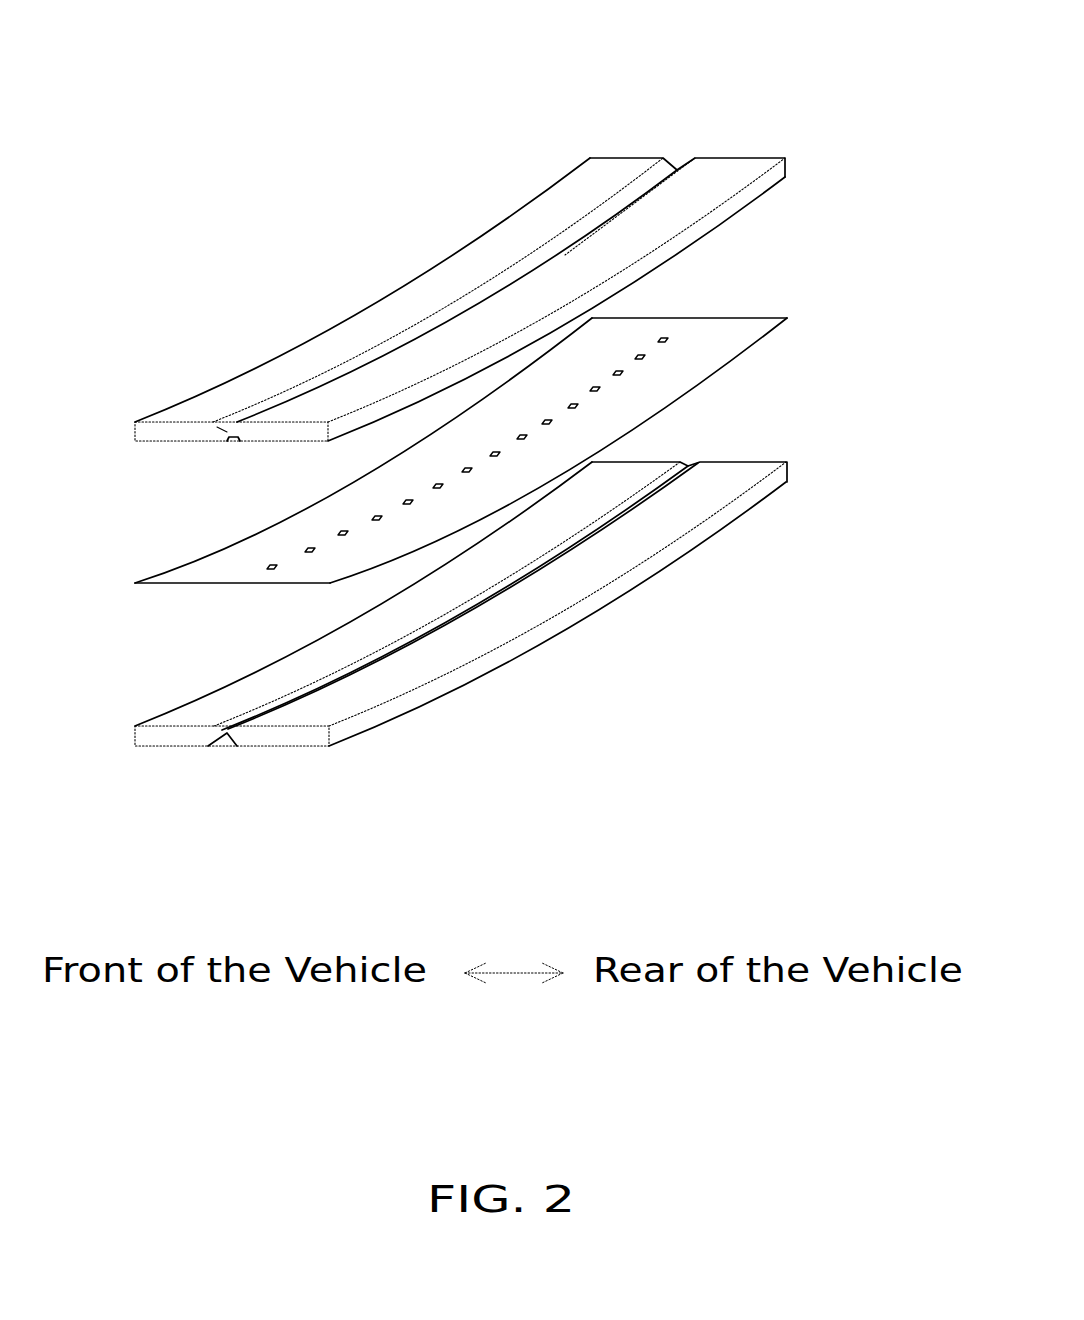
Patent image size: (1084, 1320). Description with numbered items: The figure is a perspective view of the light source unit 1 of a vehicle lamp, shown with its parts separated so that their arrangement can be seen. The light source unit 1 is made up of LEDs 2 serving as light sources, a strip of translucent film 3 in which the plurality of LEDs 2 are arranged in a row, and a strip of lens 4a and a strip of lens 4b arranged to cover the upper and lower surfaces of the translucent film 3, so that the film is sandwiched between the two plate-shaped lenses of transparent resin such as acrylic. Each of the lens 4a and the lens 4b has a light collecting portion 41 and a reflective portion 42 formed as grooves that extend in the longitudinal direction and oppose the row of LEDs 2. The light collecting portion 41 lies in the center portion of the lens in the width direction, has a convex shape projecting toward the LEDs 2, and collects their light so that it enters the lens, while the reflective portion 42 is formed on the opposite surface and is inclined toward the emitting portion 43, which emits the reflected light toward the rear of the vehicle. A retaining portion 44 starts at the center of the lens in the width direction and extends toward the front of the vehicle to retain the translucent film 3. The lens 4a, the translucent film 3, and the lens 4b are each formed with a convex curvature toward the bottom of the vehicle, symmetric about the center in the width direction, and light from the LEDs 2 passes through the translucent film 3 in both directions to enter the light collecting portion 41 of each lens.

The light source unit 1 is at (258, 104).
The LEDs 2 is at (668, 342).
The translucent film 3 is at (787, 318).
The lens 4a is at (790, 160).
The lens 4b is at (792, 464).
The light collecting portion 41 is at (237, 443).
The reflective portion 42 is at (240, 435).
The emitting portion 43 is at (693, 237).
The retaining portion 44 is at (617, 165).